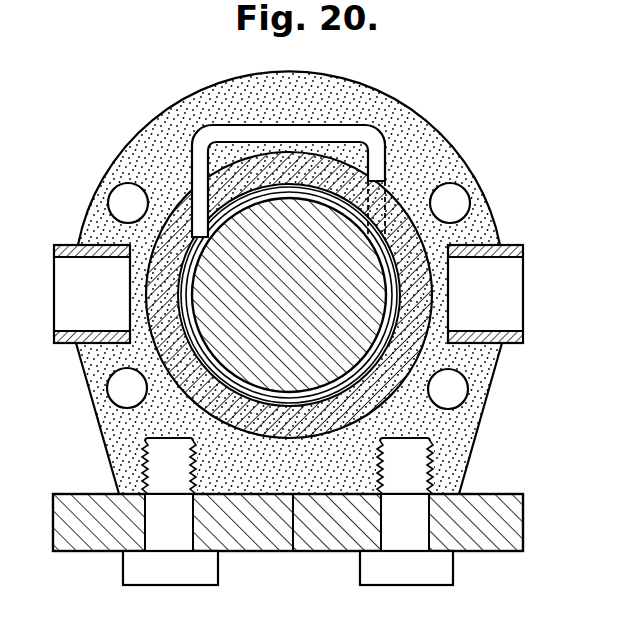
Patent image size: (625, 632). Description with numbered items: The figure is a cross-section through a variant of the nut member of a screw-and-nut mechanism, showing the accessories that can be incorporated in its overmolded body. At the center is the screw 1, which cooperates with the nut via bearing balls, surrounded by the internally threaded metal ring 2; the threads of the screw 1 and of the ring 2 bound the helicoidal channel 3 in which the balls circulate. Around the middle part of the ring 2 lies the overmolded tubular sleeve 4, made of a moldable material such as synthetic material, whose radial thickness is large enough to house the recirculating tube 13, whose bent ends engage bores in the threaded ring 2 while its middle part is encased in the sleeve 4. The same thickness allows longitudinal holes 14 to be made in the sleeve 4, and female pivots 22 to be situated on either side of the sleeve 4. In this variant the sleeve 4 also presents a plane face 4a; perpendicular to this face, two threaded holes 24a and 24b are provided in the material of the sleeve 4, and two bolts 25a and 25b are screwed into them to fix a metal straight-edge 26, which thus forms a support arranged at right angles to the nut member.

The screw 1 is at (202, 295).
The threaded ring 2 is at (417, 242).
The helicoidal channel 3 is at (397, 297).
The overmolded tubular sleeve 4 is at (453, 160).
The plane face 4a is at (297, 538).
The tube 13 is at (235, 130).
The longitudinal hole 14 is at (117, 192).
The female pivot 22 is at (77, 330).
The threaded hole 24a is at (143, 457).
The threaded hole 24b is at (430, 452).
The bolt 25a is at (128, 572).
The bolt 25b is at (445, 577).
The metal straight-edge 26 is at (520, 510).